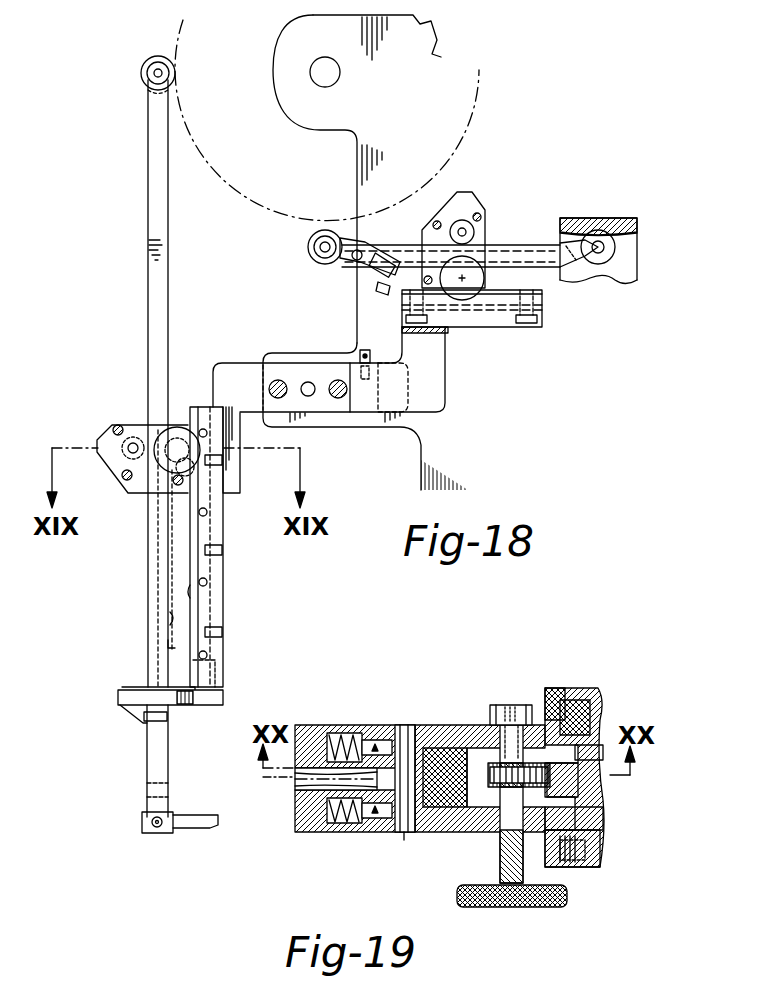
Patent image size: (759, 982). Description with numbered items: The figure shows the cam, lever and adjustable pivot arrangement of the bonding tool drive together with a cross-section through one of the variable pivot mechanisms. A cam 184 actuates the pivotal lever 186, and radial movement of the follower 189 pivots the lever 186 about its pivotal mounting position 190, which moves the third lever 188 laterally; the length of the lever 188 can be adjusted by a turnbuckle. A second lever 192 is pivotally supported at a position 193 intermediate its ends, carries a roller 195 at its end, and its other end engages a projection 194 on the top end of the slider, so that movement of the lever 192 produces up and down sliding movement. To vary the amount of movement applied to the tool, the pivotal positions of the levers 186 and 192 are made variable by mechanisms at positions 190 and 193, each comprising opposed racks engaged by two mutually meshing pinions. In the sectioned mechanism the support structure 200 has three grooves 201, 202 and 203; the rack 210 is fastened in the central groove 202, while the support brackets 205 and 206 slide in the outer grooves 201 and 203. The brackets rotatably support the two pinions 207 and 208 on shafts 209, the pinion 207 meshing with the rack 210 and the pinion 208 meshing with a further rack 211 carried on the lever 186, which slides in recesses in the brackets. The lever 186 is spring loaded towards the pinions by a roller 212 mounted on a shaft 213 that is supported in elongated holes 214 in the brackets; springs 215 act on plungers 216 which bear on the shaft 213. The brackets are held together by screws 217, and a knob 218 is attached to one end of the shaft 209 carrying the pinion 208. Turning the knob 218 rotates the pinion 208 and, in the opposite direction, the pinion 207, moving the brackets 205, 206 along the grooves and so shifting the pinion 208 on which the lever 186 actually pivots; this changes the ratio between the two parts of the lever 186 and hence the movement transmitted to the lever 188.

In FIG. 18, the cam 184 is at (258, 210).
In FIG. 18, the pivotal lever 186 is at (147, 355).
In FIG. 19, the pivotal lever 186 is at (443, 820).
In FIG. 18, the third lever 188 is at (208, 806).
In FIG. 18, the follower 189 is at (141, 78).
In FIG. 18, the pivotal mounting position 190 is at (104, 470).
In FIG. 18, the lever 192 is at (530, 250).
In FIG. 18, the pivotal support position 193 is at (487, 195).
In FIG. 18, the projection 194 is at (617, 207).
In FIG. 18, the roller 195 is at (309, 250).
In FIG. 18, the support structure 200 is at (455, 335).
In FIG. 19, the support structure 200 is at (600, 698).
In FIG. 19, the outer groove 201 is at (578, 716).
In FIG. 19, the central groove 202 is at (578, 790).
In FIG. 19, the outer groove 203 is at (582, 852).
In FIG. 19, the support bracket 205 is at (567, 690).
In FIG. 19, the support bracket 206 is at (592, 845).
In FIG. 19, the pinion 207 is at (525, 760).
In FIG. 19, the pinion 208 is at (492, 766).
In FIG. 19, the shaft 209 is at (527, 700).
In FIG. 18, the rack 210 is at (545, 300).
In FIG. 19, the rack 210 is at (603, 815).
In FIG. 18, the rack 211 is at (540, 268).
In FIG. 19, the rack 211 is at (470, 757).
In FIG. 19, the roller 212 is at (296, 785).
In FIG. 18, the shaft 213 is at (466, 222).
In FIG. 19, the shaft 213 is at (404, 840).
In FIG. 19, the elongated hole 214 is at (405, 725).
In FIG. 19, the spring 215 is at (345, 727).
In FIG. 19, the plunger 216 is at (378, 738).
In FIG. 18, the screw 217 is at (433, 225).
In FIG. 18, the knob 218 is at (472, 298).
In FIG. 19, the knob 218 is at (511, 908).